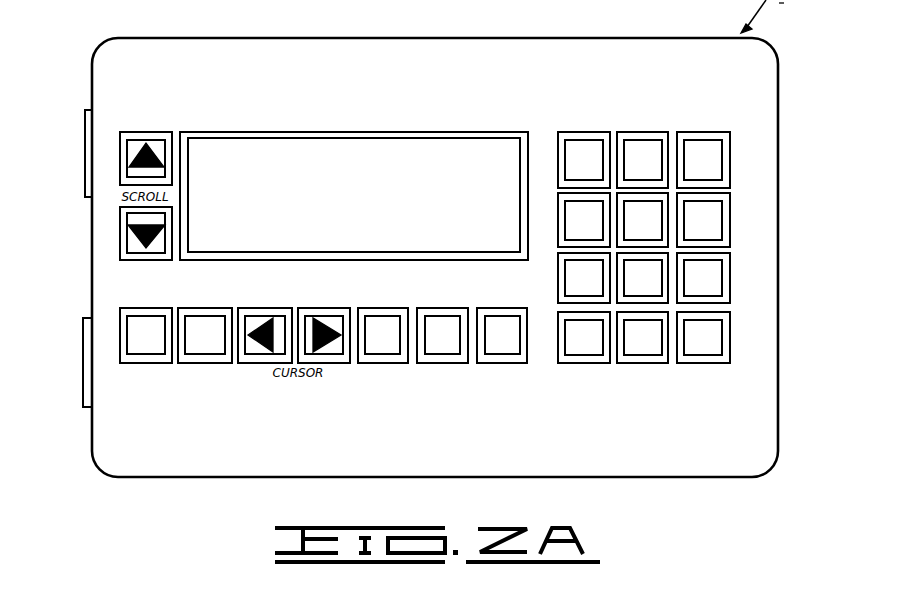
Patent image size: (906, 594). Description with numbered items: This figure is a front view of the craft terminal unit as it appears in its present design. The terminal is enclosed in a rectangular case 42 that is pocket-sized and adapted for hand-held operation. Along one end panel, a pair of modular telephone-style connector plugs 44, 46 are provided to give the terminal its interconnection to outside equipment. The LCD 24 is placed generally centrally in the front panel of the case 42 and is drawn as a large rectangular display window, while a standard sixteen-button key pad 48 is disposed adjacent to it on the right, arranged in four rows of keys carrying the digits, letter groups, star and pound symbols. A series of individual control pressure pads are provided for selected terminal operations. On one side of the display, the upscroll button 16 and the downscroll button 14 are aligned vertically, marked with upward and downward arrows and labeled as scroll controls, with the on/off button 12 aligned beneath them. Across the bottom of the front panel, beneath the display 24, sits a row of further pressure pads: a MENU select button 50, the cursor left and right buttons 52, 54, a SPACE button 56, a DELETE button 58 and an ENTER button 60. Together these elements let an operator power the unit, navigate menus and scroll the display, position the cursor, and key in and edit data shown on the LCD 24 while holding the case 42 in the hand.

The on/off button 12 is at (140, 318).
The downscroll button 14 is at (147, 256).
The upscroll button 16 is at (156, 141).
The LCD 24 is at (408, 151).
The rectangular case 42 is at (760, 428).
The RJ-11 connector plug 44 is at (85, 150).
The RJ-11 connector plug 46 is at (83, 355).
The key pad 48 is at (742, 387).
The MENU select button 50 is at (196, 318).
The cursor left button 52 is at (255, 318).
The cursor right button 54 is at (316, 318).
The SPACE button 56 is at (377, 318).
The DELETE button 58 is at (437, 318).
The ENTER button 60 is at (497, 318).